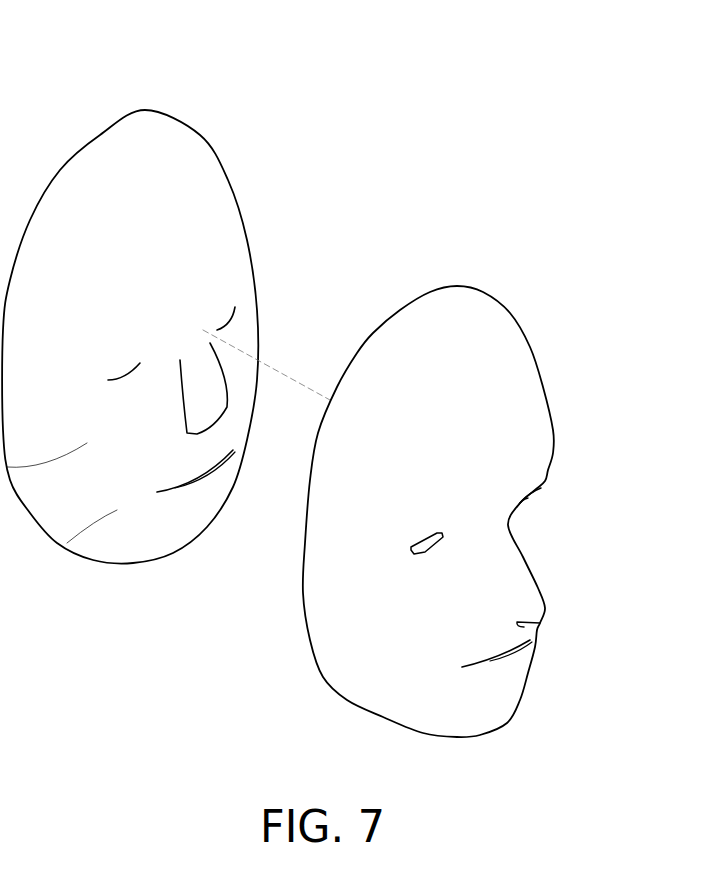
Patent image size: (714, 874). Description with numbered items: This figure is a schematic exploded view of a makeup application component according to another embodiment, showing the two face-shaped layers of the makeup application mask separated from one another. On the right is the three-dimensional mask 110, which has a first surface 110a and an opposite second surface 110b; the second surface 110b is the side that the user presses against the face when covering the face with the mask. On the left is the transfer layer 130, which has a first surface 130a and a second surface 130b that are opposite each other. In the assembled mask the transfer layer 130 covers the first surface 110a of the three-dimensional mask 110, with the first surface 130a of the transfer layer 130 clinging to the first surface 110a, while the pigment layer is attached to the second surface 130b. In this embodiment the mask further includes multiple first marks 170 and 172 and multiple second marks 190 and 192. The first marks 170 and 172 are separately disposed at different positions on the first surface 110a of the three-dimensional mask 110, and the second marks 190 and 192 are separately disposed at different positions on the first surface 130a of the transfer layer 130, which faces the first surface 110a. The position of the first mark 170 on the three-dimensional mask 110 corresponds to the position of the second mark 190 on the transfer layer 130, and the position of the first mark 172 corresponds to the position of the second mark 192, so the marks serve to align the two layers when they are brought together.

The three-dimensional mask 110 is at (458, 284).
The first surface of the three-dimensional mask 110a is at (355, 341).
The second surface of the three-dimensional mask 110b is at (504, 404).
The transfer layer 130 is at (153, 108).
The first surface of the transfer layer 130a is at (214, 226).
The second surface of the transfer layer 130b is at (60, 160).
The first mark 170 is at (455, 342).
The first mark 172 is at (492, 685).
The second mark 190 is at (160, 165).
The second mark 192 is at (173, 503).